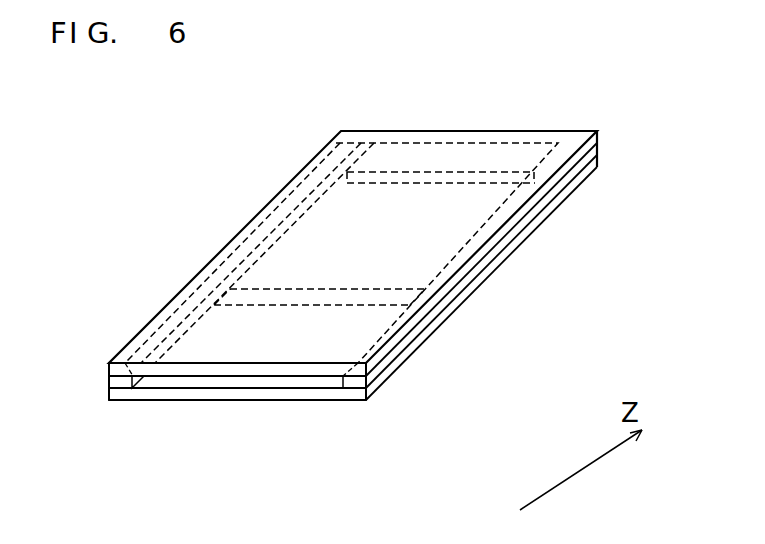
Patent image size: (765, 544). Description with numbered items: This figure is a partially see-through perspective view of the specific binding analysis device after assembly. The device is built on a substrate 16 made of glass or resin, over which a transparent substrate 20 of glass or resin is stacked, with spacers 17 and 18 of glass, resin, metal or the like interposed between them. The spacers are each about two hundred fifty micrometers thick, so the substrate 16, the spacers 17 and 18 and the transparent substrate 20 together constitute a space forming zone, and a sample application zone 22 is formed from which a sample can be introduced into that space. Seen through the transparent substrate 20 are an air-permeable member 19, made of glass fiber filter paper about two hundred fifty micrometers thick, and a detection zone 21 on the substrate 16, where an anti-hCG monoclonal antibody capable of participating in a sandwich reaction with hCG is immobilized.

The substrate 16 is at (267, 392).
The spacer 17 is at (367, 389).
The spacer 18 is at (109, 392).
The air-permeable member 19 is at (466, 170).
The transparent substrate 20 is at (392, 134).
The detection zone 21 is at (333, 301).
The sample application zone 22 is at (180, 382).